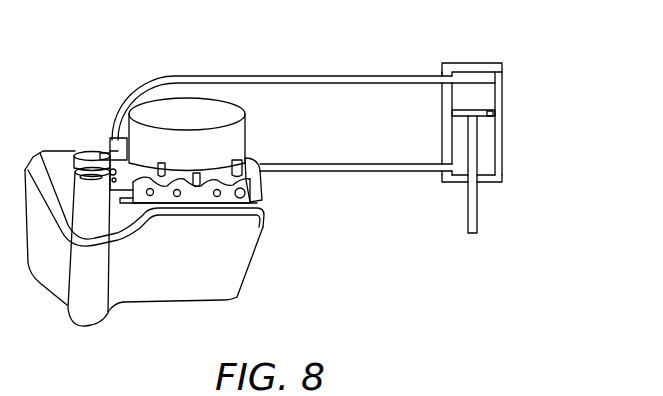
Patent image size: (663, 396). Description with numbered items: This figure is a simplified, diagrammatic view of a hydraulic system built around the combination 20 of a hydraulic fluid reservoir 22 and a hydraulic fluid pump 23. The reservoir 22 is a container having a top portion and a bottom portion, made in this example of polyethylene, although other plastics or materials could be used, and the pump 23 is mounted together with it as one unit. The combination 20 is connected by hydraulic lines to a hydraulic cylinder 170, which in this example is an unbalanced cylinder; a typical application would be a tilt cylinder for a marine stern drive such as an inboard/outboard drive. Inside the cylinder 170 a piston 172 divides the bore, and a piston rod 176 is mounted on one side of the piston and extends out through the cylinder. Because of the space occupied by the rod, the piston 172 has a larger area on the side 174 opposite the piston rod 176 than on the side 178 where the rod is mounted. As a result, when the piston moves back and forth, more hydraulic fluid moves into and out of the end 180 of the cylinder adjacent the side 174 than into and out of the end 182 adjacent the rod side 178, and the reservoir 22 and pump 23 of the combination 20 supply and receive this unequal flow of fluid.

The combination 20 is at (268, 240).
The hydraulic fluid reservoir 22 is at (226, 271).
The hydraulic fluid pump 23 is at (233, 140).
The hydraulic cylinder 170 is at (444, 131).
The piston 172 is at (491, 115).
The side 174 is at (471, 107).
The piston rod 176 is at (478, 215).
The side 178 is at (490, 118).
The end 180 is at (470, 63).
The end 182 is at (486, 183).